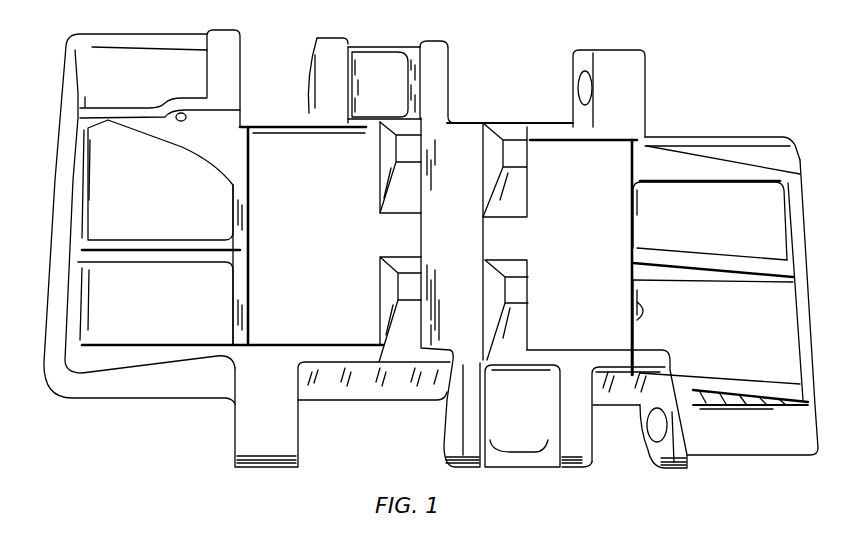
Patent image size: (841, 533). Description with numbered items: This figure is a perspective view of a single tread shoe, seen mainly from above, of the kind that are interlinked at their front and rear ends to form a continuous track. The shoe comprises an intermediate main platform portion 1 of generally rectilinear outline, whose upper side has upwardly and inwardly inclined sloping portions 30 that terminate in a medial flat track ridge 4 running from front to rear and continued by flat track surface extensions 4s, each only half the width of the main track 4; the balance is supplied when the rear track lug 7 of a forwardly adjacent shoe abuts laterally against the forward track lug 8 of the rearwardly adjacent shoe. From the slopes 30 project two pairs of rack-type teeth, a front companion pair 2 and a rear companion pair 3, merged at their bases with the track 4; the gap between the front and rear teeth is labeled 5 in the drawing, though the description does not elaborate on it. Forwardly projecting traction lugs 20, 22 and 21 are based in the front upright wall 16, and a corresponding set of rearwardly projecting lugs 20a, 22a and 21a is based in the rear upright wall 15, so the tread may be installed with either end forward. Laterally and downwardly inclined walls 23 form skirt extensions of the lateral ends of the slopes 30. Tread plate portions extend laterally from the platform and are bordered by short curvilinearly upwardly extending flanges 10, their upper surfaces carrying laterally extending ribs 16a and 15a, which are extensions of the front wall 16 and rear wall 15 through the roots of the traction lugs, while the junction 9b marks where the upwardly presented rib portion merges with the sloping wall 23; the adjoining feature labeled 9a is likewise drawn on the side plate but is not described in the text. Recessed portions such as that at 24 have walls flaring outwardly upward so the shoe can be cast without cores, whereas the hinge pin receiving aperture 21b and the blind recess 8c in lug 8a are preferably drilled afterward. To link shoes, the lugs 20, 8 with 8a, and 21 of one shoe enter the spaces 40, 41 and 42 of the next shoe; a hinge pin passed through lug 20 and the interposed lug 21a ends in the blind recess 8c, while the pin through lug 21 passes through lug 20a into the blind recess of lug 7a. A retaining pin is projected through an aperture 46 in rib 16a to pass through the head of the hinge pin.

The main platform portion 1 is at (452, 232).
The front companion pair of teeth 2 is at (420, 145).
The rear companion pair of teeth 3 is at (403, 287).
The medial flat track ridge 4 is at (459, 157).
The flat track surface extensions 4s is at (437, 97).
The side slot 5 is at (398, 238).
The rear track lug 7 is at (462, 472).
The lug 7a is at (567, 466).
The forward track lug 8 is at (440, 57).
The lug 8a is at (322, 48).
The blind recess 8c is at (312, 72).
The upper groove 9a is at (84, 243).
The junction 9b is at (240, 258).
The flanges 10 is at (58, 183).
The rear upright wall 15 is at (337, 352).
The ribs 15a is at (130, 362).
The front upright wall 16 is at (296, 114).
The rib portion 16a is at (135, 110).
The forwardly projecting traction lug 20 is at (228, 38).
The rearwardly projecting traction lug 20a is at (673, 467).
The forwardly projecting traction lug 21 is at (619, 61).
The rearwardly projecting traction lug 21a is at (272, 462).
The hinge pin receiving aperture 21b is at (582, 87).
The forwardly projecting traction lug 22 is at (398, 35).
The rearwardly projecting traction lug 22a is at (533, 465).
The laterally and downwardly inclined walls 23 is at (246, 200).
The recessed portion 24 is at (396, 97).
The sloping portions 30 is at (333, 191).
The space 40 is at (204, 442).
The space 41 is at (348, 460).
The space 42 is at (625, 462).
The aperture 46 is at (180, 123).